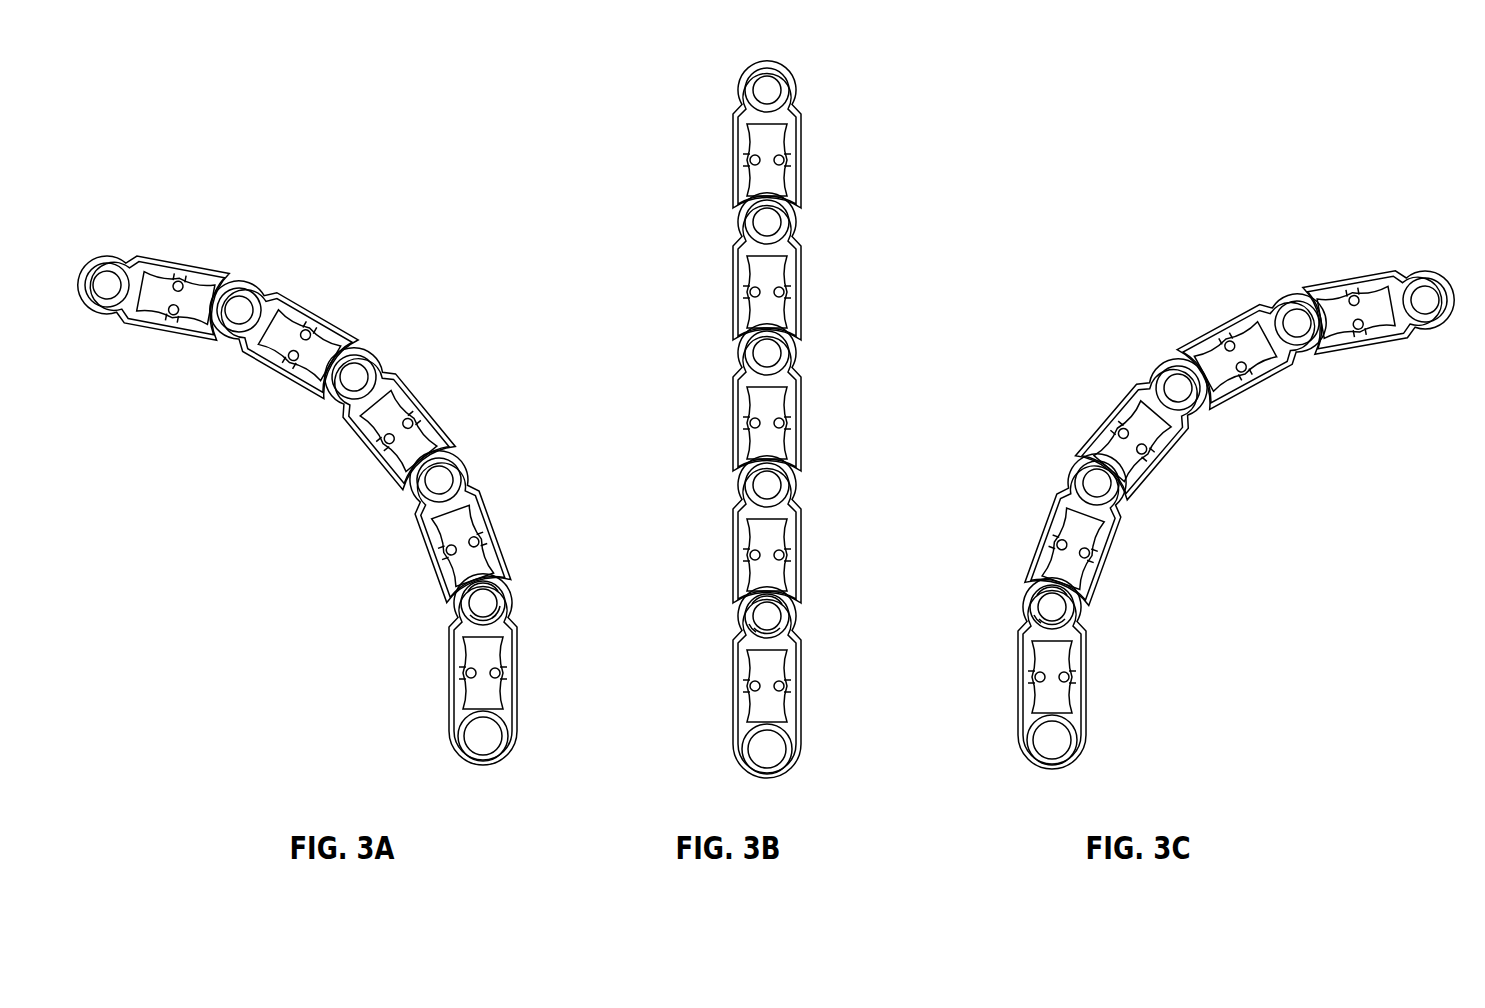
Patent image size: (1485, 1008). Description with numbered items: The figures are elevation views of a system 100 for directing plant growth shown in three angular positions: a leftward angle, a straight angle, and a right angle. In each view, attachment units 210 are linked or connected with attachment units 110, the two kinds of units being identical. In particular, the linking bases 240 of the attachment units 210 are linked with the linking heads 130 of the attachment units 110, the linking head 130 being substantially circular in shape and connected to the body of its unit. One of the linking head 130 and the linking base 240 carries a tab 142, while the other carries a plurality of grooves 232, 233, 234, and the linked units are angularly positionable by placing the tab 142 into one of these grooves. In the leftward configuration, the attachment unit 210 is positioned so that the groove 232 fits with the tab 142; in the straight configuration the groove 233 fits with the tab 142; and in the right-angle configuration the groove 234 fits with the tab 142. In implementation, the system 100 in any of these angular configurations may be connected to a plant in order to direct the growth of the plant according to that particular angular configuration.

In FIG. 3A, the system for directing plant growth 100 is at (325, 266).
In FIG. 3B, the system for directing plant growth 100 is at (662, 215).
In FIG. 3C, the system for directing plant growth 100 is at (1142, 289).
In FIG. 3A, the first attachment unit 110 is at (388, 687).
In FIG. 3B, the first attachment unit 110 is at (825, 717).
In FIG. 3C, the first attachment unit 110 is at (1144, 741).
In FIG. 3A, the linking head 130 is at (462, 598).
In FIG. 3B, the linking head 130 is at (790, 597).
In FIG. 3C, the linking head 130 is at (1080, 610).
In FIG. 3A, the tab 142 is at (487, 625).
In FIG. 3B, the tab 142 is at (785, 637).
In FIG. 3C, the tab 142 is at (1073, 623).
In FIG. 3A, the second attachment unit 210 is at (374, 541).
In FIG. 3B, the second attachment unit 210 is at (826, 516).
In FIG. 3C, the second attachment unit 210 is at (1122, 570).
In FIG. 3A, the groove 232 is at (492, 618).
In FIG. 3B, the groove 233 is at (748, 636).
In FIG. 3C, the groove 234 is at (1033, 627).
In FIG. 3A, the linking base 240 is at (492, 588).
In FIG. 3B, the linking base 240 is at (755, 612).
In FIG. 3C, the linking base 240 is at (1037, 597).